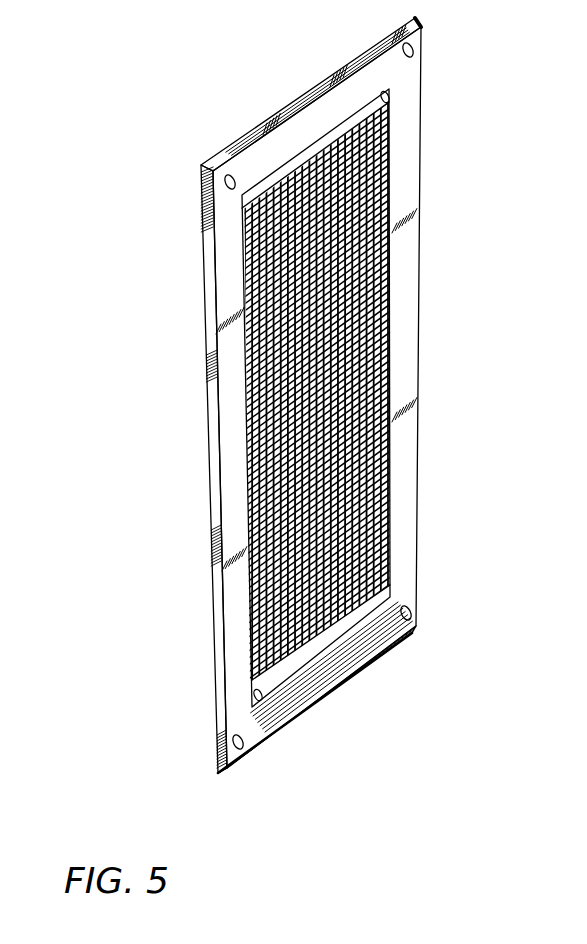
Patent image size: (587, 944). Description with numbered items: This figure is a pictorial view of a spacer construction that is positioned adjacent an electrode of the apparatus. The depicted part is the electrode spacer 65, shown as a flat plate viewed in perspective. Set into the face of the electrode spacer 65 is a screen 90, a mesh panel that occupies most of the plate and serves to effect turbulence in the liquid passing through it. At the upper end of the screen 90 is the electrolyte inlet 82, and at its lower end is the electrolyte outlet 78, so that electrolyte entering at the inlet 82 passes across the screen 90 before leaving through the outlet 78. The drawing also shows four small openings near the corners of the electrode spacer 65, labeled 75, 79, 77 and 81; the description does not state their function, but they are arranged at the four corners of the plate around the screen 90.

The electrode spacer 65 is at (410, 223).
The mounting hole 75 is at (233, 174).
The mounting hole 77 is at (407, 621).
The electrolyte outlet 78 is at (255, 696).
The mounting hole 79 is at (400, 36).
The mounting hole 81 is at (239, 750).
The electrolyte inlet 82 is at (389, 98).
The screen 90 is at (262, 389).